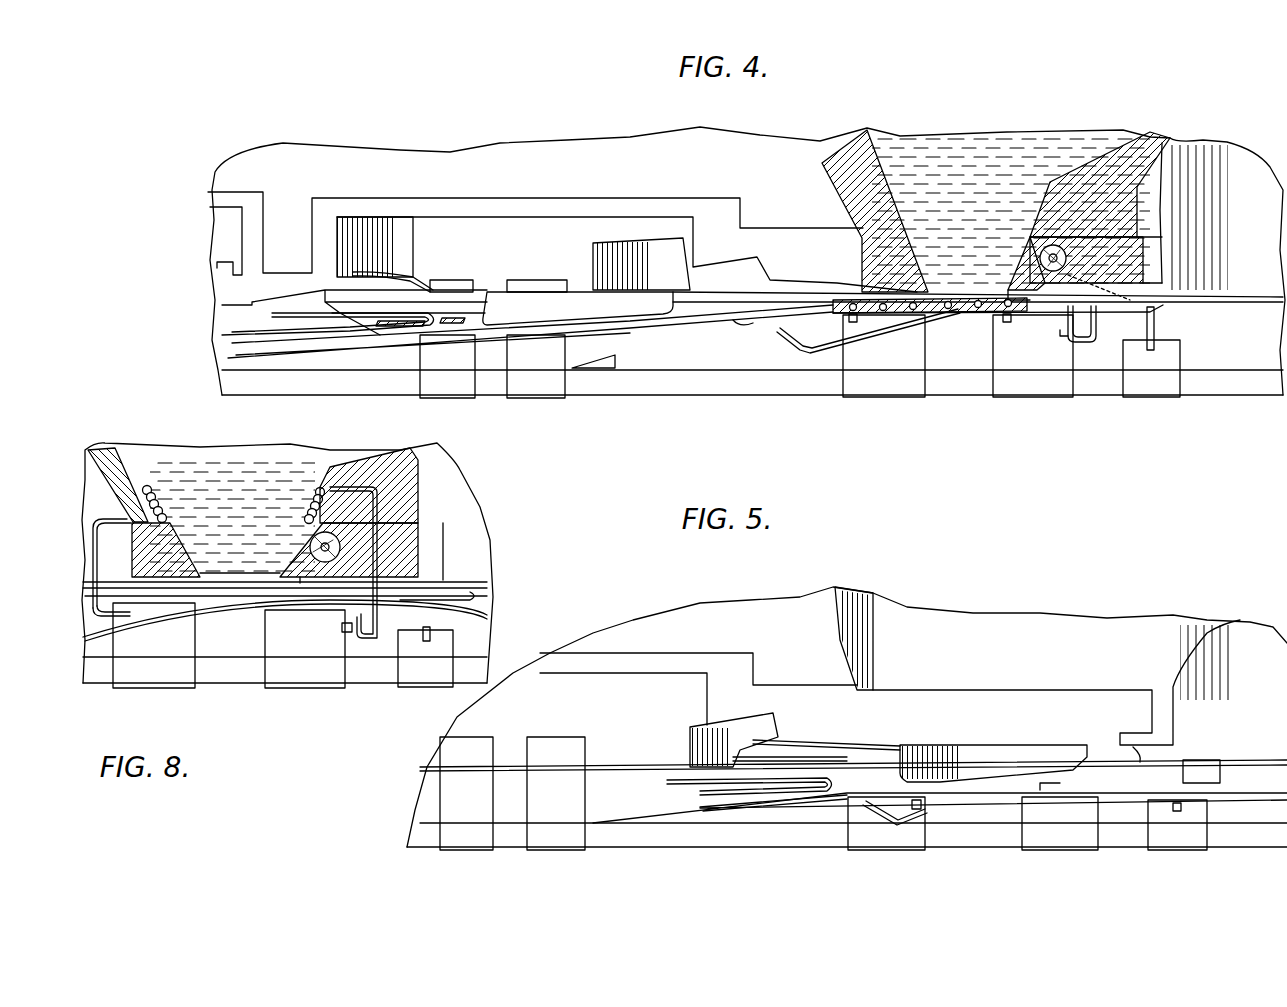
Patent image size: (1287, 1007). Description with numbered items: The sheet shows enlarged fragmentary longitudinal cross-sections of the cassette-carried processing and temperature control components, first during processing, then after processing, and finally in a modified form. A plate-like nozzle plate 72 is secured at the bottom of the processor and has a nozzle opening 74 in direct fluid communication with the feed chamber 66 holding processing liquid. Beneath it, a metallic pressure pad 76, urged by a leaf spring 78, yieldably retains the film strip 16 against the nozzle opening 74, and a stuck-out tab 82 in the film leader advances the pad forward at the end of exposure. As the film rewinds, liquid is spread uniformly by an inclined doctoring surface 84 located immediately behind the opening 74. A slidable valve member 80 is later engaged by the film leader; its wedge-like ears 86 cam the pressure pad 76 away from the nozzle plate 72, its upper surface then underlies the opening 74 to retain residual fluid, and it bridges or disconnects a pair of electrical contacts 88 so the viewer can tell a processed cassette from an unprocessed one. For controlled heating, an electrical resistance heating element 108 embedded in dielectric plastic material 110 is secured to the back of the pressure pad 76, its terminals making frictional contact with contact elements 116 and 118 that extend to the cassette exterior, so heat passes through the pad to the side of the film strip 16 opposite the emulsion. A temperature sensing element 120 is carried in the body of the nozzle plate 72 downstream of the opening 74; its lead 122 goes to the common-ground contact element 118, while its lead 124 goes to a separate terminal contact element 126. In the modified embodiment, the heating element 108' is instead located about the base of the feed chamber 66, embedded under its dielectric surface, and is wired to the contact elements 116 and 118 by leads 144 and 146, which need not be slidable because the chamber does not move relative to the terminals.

In FIG. 4, the film strip 16 is at (1236, 297).
In FIG. 8, the film strip 16 is at (486, 571).
In FIG. 5, the film strip 16 is at (1240, 757).
In FIG. 4, the feed chamber 66 is at (982, 193).
In FIG. 8, the feed chamber 66 is at (266, 476).
In FIG. 4, the nozzle plate 72 is at (1140, 253).
In FIG. 8, the nozzle plate 72 is at (405, 540).
In FIG. 5, the nozzle plate 72 is at (1040, 726).
In FIG. 4, the nozzle opening 74 is at (958, 290).
In FIG. 8, the nozzle opening 74 is at (230, 578).
In FIG. 4, the pressure pad 76 is at (1026, 312).
In FIG. 5, the pressure pad 76 is at (1060, 785).
In FIG. 4, the leaf spring 78 is at (862, 331).
In FIG. 8, the leaf spring 78 is at (138, 624).
In FIG. 4, the valve member 80 is at (533, 300).
In FIG. 5, the valve member 80 is at (937, 790).
In FIG. 4, the tab 82 is at (1190, 303).
In FIG. 8, the tab 82 is at (462, 590).
In FIG. 4, the doctoring surface 84 is at (1000, 298).
In FIG. 8, the doctoring surface 84 is at (300, 580).
In FIG. 4, the wedge-like ears 86 is at (580, 311).
In FIG. 4, the electrical contacts 88 is at (457, 388).
In FIG. 5, the electrical contacts 88 is at (555, 740).
In FIG. 4, the heating element 108 is at (930, 326).
In FIG. 8, the heating element 108' is at (220, 487).
In FIG. 4, the dielectric plastic material 110 is at (963, 310).
In FIG. 4, the contact element 116 is at (862, 388).
In FIG. 8, the contact element 116 is at (130, 677).
In FIG. 5, the contact element 116 is at (883, 843).
In FIG. 4, the contact element 118 is at (1013, 390).
In FIG. 8, the contact element 118 is at (275, 680).
In FIG. 5, the contact element 118 is at (1045, 837).
In FIG. 4, the temperature sensing element 120 is at (1047, 245).
In FIG. 8, the temperature sensing element 120 is at (328, 532).
In FIG. 4, the lead 122 is at (1088, 343).
In FIG. 8, the lead 122 is at (345, 635).
In FIG. 4, the lead 124 is at (1157, 328).
In FIG. 8, the lead 124 is at (440, 637).
In FIG. 4, the terminal contact element 126 is at (1168, 388).
In FIG. 8, the terminal contact element 126 is at (437, 677).
In FIG. 5, the terminal contact element 126 is at (1173, 845).
In FIG. 8, the lead 144 is at (112, 528).
In FIG. 8, the lead 146 is at (360, 650).